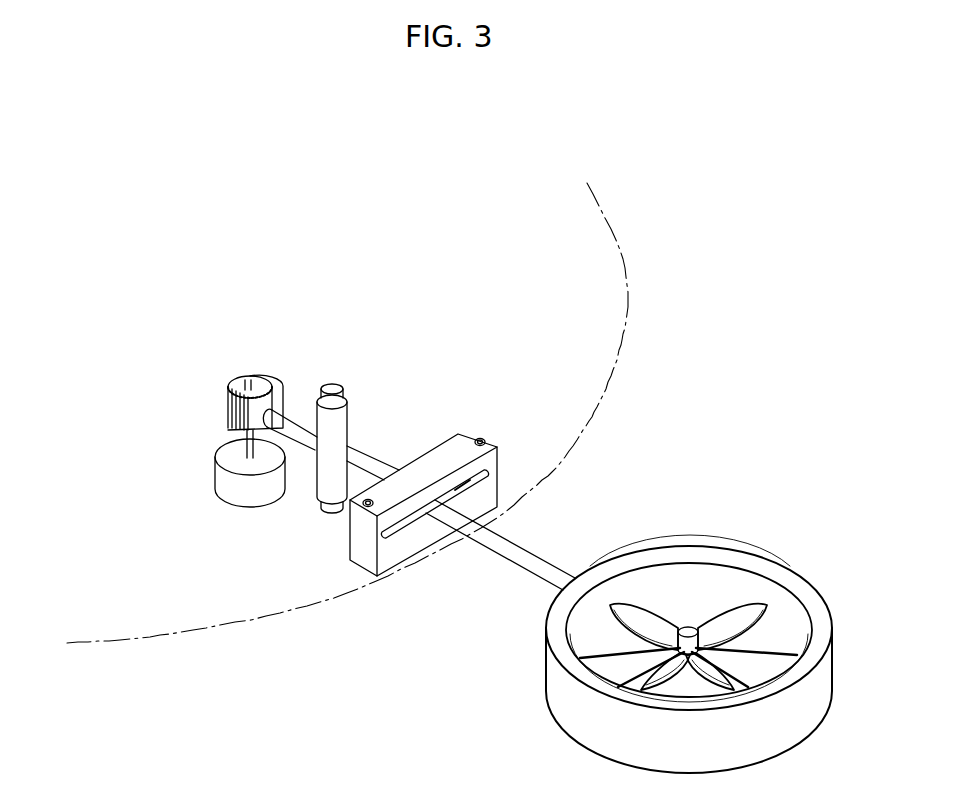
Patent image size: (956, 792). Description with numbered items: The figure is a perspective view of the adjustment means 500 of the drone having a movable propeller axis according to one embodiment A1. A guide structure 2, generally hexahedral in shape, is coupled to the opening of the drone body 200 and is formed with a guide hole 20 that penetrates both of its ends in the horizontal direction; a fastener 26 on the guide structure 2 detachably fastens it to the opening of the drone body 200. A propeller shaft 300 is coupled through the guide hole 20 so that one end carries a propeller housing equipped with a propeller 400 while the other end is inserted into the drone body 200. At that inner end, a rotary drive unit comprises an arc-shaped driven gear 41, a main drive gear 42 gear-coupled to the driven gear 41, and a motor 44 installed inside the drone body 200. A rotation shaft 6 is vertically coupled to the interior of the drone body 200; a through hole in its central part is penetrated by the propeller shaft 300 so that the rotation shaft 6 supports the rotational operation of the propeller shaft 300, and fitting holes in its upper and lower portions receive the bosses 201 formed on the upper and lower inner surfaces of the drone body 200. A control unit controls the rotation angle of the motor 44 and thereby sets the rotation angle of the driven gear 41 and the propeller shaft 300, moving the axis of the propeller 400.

The guide structure 2 is at (357, 568).
The rotation shaft 6 is at (360, 438).
The guide hole 20 is at (498, 472).
The fastener 26 is at (481, 438).
The driven gear 41 is at (283, 383).
The main drive gear 42 is at (226, 402).
The motor 44 is at (222, 495).
The drone body 200 is at (622, 273).
The boss 201 is at (333, 382).
The propeller shaft 300 is at (552, 563).
The propeller 400 is at (747, 617).
The adjustment means 500 is at (223, 364).
The embodiment A1 is at (467, 237).